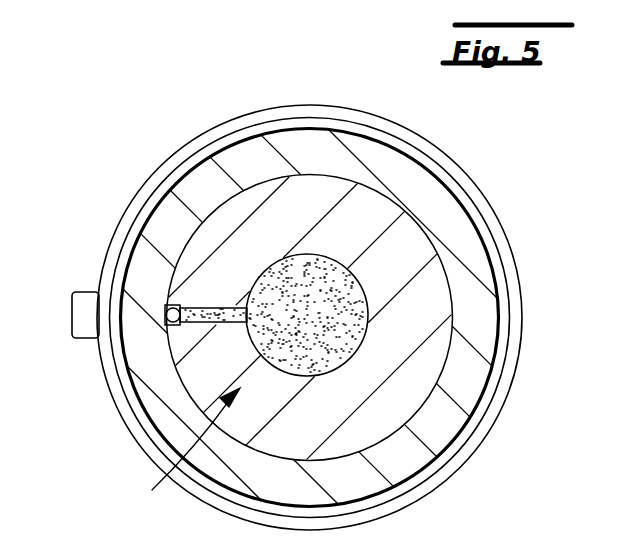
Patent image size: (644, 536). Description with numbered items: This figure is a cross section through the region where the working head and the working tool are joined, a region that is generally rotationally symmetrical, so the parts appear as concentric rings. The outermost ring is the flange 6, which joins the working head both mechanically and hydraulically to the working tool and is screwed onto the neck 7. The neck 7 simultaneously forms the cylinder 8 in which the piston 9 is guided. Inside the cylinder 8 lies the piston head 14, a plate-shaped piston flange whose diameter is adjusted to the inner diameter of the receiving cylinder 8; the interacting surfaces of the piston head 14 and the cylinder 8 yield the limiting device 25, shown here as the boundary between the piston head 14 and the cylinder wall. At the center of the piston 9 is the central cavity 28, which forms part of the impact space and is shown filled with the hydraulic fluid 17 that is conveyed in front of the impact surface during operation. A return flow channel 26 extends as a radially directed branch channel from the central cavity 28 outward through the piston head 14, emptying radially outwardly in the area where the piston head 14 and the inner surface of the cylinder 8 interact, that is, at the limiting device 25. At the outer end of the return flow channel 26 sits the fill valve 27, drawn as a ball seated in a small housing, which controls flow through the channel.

The flange 6 is at (507, 248).
The neck 7 is at (443, 217).
The cylinder 8 is at (415, 178).
The piston 9 is at (188, 456).
The piston head 14 is at (377, 403).
The hydraulic fluid 17 is at (300, 298).
The limiting device 25 is at (180, 390).
The return flow channel 26 is at (220, 307).
The fill valve 27 is at (148, 284).
The central cavity 28 is at (337, 325).